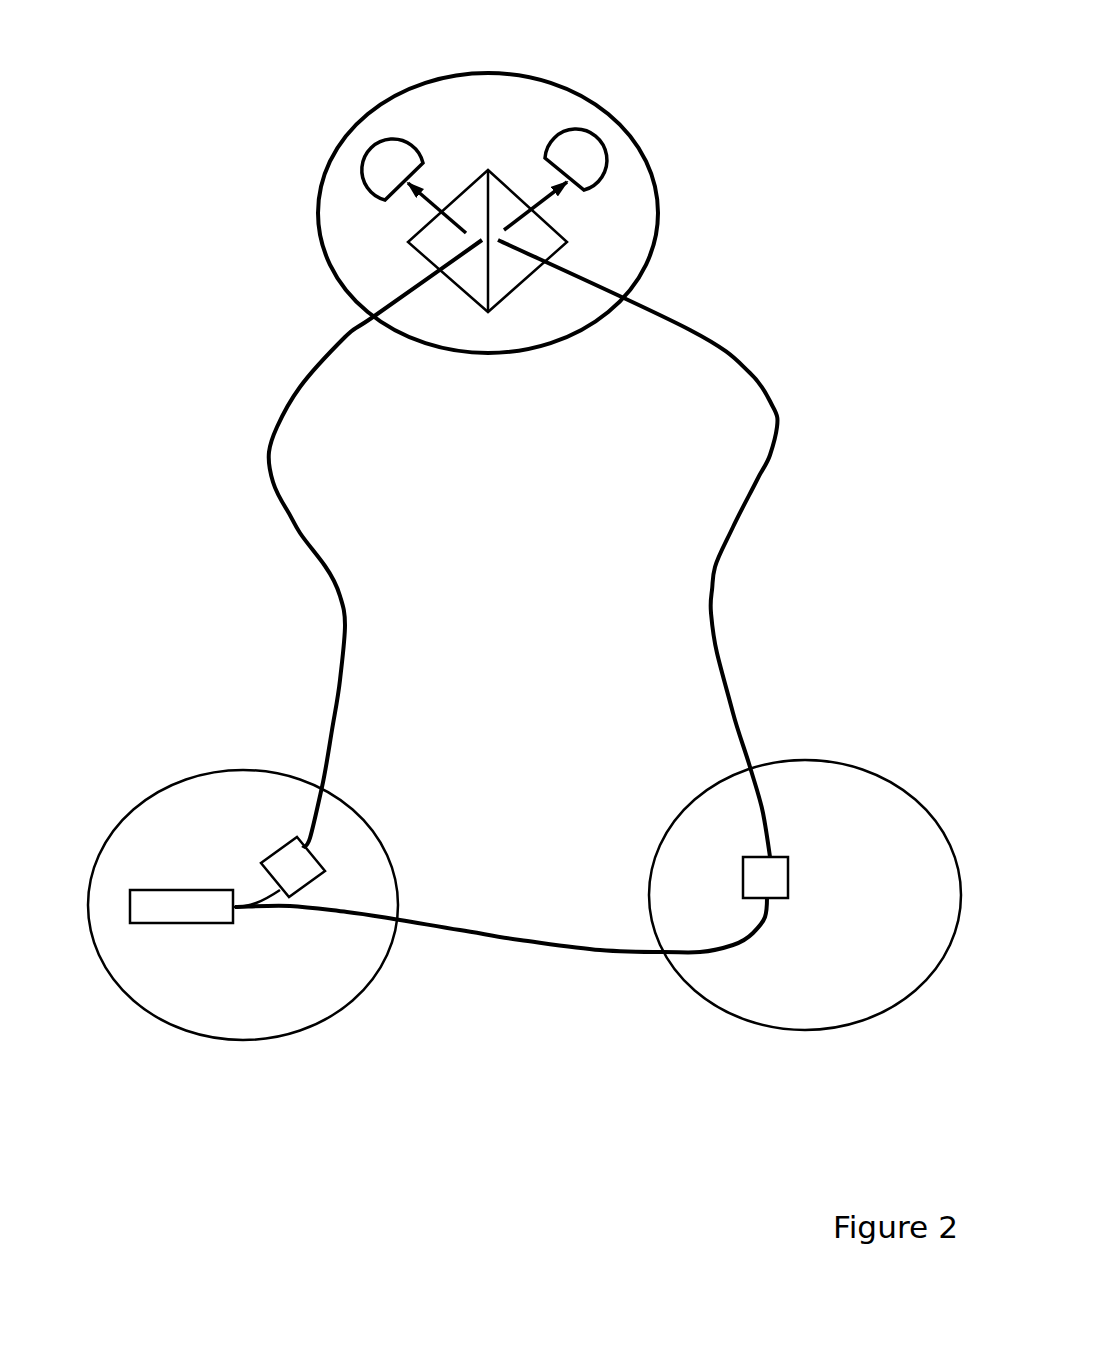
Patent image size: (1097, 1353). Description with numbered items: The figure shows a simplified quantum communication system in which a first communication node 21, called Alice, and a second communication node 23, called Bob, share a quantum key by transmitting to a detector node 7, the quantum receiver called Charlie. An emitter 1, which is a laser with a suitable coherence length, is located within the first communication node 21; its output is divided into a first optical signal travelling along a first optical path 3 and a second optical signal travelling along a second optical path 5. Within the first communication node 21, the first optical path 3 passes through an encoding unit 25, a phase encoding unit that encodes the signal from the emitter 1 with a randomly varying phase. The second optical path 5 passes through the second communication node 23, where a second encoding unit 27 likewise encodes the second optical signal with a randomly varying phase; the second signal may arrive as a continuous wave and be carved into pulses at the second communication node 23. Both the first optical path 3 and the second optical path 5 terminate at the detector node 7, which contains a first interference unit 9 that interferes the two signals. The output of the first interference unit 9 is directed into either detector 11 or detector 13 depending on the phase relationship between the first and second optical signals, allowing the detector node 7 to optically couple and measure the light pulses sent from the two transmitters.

The emitter 1 is at (162, 932).
The first optical path 3 is at (293, 535).
The second optical path 5 is at (713, 602).
The detector node 7 is at (660, 260).
The first interference unit 9 is at (405, 240).
The detector 11 is at (357, 158).
The detector 13 is at (612, 158).
The first communication node 21 is at (320, 1027).
The second communication node 23 is at (830, 1030).
The encoding unit 25 is at (313, 857).
The second encoding unit 27 is at (765, 858).